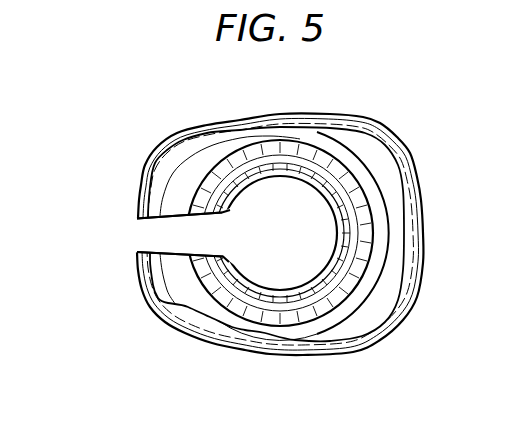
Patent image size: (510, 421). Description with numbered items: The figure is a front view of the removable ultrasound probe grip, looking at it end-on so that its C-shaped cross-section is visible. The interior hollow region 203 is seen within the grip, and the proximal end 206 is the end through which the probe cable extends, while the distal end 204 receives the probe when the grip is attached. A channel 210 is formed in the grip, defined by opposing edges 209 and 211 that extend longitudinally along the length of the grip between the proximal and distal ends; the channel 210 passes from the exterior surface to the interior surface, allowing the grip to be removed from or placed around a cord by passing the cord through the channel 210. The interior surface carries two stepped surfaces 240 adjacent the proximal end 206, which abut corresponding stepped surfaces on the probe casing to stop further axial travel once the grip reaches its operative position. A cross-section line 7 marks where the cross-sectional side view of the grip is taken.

The cross-section line 7 is at (279, 395).
The interior hollow region 203 is at (296, 276).
The distal end 204 is at (402, 296).
The proximal end 206 is at (294, 216).
The opposing edge 209 is at (126, 250).
The channel 210 is at (143, 236).
The opposing edge 211 is at (128, 216).
The stepped surfaces 240 is at (158, 304).